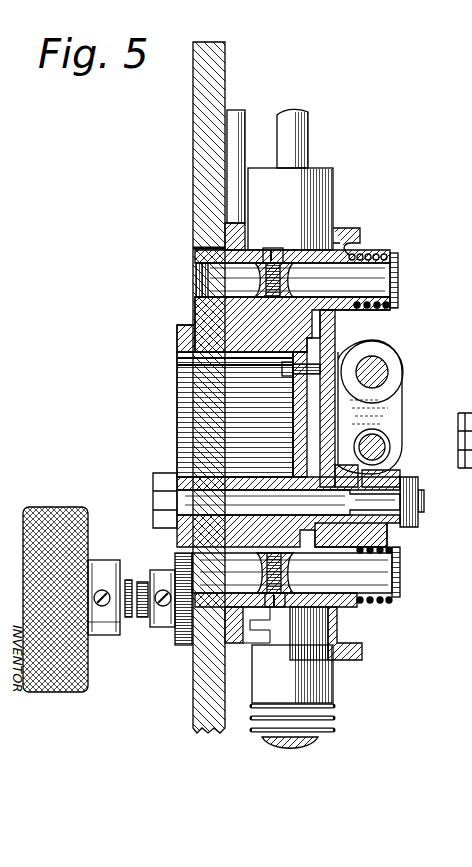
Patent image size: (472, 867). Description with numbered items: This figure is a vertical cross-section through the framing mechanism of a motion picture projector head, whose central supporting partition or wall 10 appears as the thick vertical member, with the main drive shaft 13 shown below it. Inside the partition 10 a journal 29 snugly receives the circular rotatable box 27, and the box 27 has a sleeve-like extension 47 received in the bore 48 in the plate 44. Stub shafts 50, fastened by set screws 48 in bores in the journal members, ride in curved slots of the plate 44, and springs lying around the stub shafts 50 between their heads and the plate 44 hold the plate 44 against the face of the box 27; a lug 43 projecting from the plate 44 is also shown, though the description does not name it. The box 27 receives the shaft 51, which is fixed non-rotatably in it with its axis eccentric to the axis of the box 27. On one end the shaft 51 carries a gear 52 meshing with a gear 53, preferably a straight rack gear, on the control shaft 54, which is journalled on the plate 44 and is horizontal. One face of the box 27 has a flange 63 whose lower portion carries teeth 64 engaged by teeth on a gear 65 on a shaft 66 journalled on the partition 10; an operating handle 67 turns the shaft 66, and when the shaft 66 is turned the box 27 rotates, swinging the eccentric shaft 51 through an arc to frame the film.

The partition 10 is at (193, 180).
The main drive shaft 13 is at (318, 742).
The rotatable box 27 is at (177, 411).
The journal 29 is at (195, 303).
The lug 43 is at (348, 468).
The plate 44 is at (335, 333).
The sleeve-like extension 47 is at (290, 476).
The set screws 48 is at (265, 250).
The stub shafts 50 is at (355, 270).
The shaft 51 is at (200, 498).
The gear 52 is at (387, 532).
The gear 53 is at (392, 455).
The control shaft 54 is at (385, 440).
The flange 63 is at (177, 336).
The teeth 64 is at (180, 560).
The gear 65 is at (178, 645).
The shaft 66 is at (124, 575).
The operating handle 67 is at (70, 490).